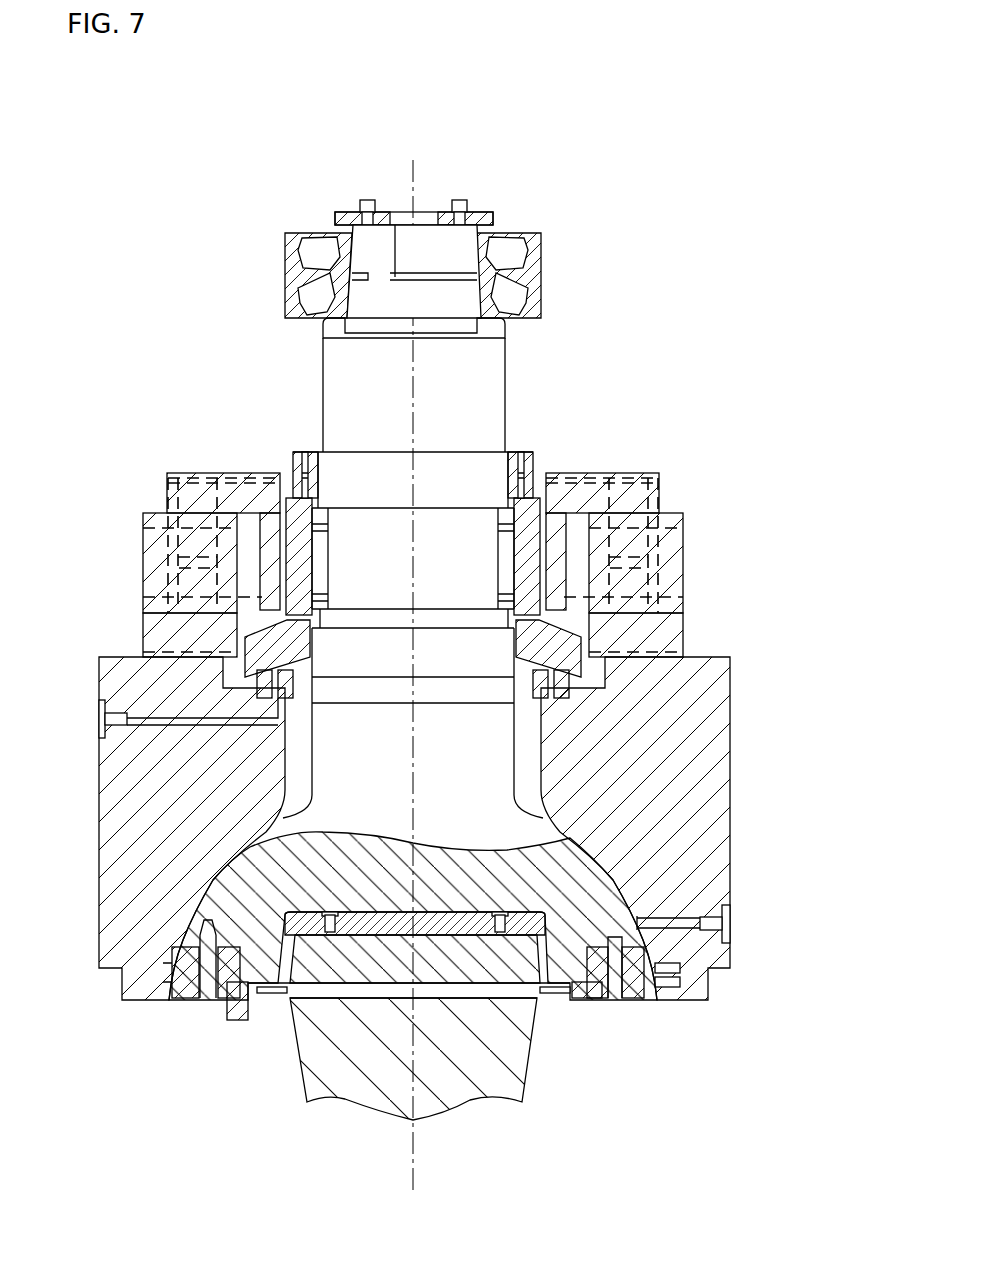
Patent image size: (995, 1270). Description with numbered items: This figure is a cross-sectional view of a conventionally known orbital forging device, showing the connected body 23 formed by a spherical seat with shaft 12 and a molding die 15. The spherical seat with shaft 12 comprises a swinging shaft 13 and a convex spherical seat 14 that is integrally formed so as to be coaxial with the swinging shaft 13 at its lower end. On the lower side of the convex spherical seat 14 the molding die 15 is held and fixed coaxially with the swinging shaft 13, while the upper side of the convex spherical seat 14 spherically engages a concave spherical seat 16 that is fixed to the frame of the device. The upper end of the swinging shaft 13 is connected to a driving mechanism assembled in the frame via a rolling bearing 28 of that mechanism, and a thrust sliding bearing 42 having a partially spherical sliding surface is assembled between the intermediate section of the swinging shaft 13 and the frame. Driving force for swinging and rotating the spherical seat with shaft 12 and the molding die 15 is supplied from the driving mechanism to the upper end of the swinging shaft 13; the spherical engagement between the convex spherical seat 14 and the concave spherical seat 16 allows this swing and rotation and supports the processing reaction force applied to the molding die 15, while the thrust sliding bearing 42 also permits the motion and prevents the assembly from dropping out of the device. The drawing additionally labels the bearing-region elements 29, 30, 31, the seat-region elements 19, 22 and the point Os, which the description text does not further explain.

The spherical seat with shaft 12 is at (518, 398).
The swinging shaft 13 is at (323, 412).
The convex spherical seat 14 is at (260, 897).
The molding die 15 is at (498, 1038).
The concave spherical seat 16 is at (710, 888).
The spherical body 19 is at (560, 862).
The gap 22 is at (555, 836).
The connected body 23 is at (458, 572).
The rolling bearing 28 is at (307, 227).
The bearing outer ring 29 is at (540, 300).
The nut 30 is at (480, 240).
The rollers 31 is at (515, 300).
The thrust sliding bearing 42 is at (570, 633).
The sphere center Os is at (638, 884).